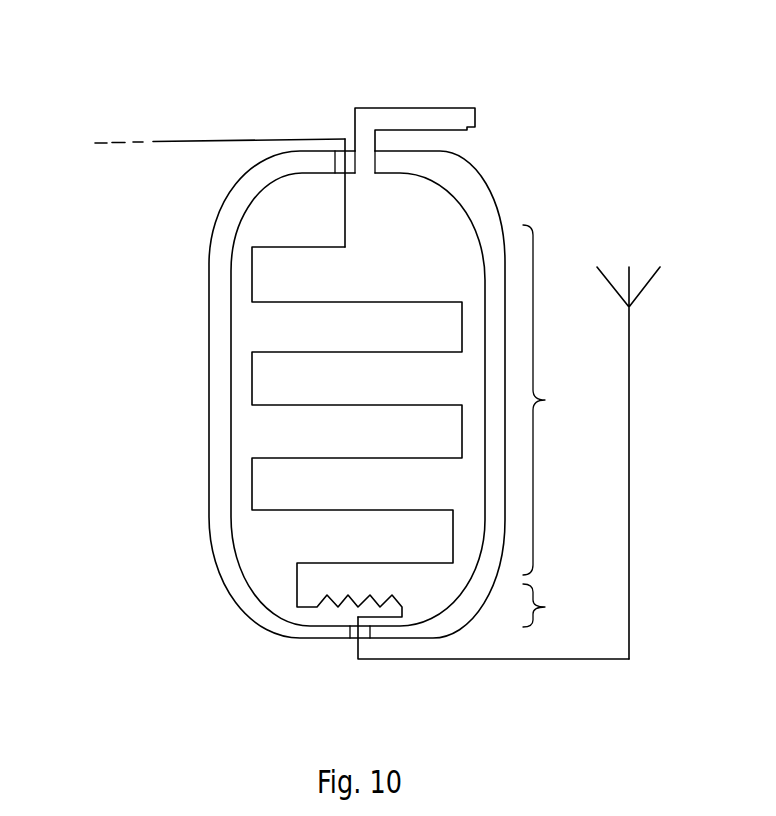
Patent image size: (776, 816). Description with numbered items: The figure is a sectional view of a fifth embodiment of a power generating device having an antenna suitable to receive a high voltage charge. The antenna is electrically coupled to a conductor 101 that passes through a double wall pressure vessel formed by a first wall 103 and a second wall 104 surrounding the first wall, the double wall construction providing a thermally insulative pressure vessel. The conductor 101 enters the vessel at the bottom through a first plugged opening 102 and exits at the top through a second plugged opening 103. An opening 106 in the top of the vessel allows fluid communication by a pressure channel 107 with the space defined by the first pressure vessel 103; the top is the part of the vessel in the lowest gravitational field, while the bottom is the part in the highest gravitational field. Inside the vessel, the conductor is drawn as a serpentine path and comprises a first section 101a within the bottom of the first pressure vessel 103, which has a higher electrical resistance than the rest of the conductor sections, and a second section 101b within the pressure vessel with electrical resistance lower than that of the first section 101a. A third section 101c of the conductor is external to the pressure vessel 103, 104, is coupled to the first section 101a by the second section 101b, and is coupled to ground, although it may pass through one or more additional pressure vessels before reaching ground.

The conductor 101 is at (630, 373).
The first section 101a is at (562, 605).
The second section 101b is at (561, 400).
The third section 101c is at (125, 141).
The first plugged opening 102 is at (353, 640).
The first wall 103 is at (230, 292).
The second wall 104 is at (210, 353).
The opening 106 is at (366, 162).
The pressure channel 107 is at (450, 123).